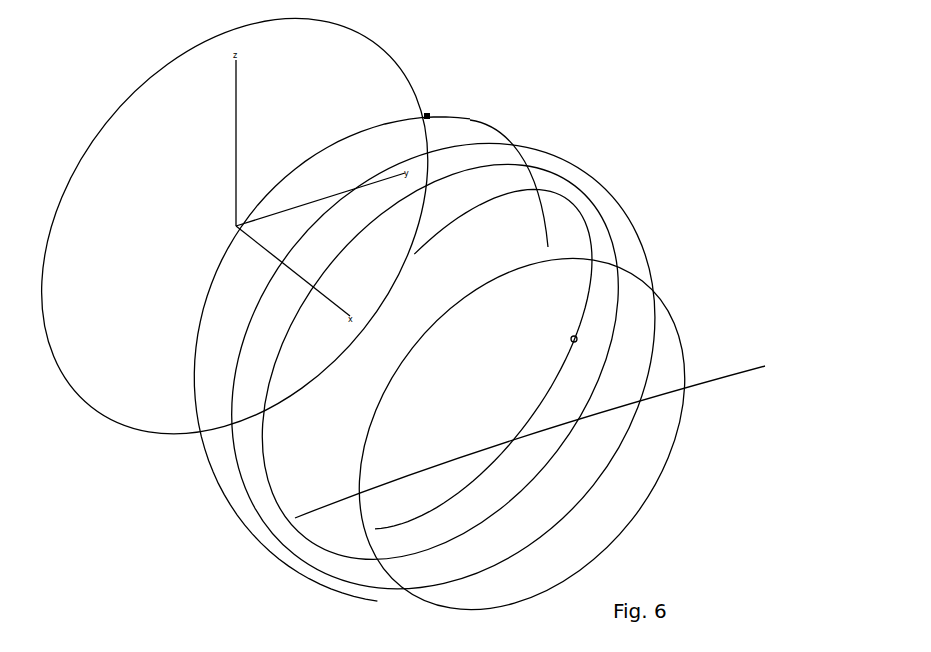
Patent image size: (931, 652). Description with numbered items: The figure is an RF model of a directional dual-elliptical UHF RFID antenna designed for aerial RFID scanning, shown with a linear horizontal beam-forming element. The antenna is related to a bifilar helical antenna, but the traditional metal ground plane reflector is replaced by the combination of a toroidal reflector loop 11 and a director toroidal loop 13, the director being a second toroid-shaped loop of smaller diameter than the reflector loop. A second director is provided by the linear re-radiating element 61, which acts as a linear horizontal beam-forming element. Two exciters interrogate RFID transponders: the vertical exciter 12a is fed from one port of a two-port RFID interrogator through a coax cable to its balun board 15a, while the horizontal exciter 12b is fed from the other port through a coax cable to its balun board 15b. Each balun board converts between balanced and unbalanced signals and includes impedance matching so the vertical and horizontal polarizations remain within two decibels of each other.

The toroidal reflector loop 11 is at (125, 56).
The vertical exciter 12a is at (493, 128).
The horizontal exciter 12b is at (530, 157).
The director toroidal loop 13 is at (672, 325).
The balun board of vertical exciter 15a is at (429, 114).
The balun board of horizontal exciter 15b is at (577, 337).
The linear re-radiating element 61 is at (712, 380).